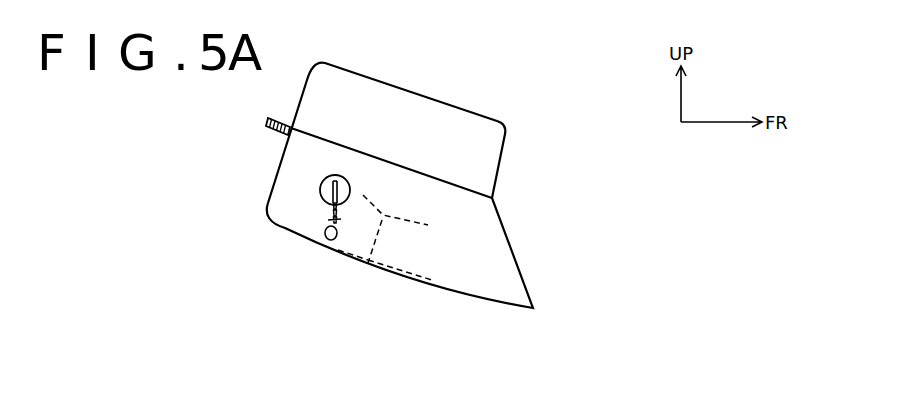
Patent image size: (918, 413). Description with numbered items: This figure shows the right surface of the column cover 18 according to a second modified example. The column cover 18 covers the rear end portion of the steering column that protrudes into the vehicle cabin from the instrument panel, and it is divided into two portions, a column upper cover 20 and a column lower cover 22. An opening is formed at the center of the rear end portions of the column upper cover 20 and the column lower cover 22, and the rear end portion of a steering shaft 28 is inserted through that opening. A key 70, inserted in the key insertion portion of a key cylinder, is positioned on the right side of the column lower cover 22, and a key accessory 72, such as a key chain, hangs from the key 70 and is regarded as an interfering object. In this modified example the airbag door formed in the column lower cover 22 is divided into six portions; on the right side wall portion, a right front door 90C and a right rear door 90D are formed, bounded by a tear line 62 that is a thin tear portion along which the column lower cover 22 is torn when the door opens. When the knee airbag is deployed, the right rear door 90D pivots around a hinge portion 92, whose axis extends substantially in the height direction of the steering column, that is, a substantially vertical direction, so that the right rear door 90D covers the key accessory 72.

The column cover 18 is at (420, 211).
The column upper cover 20 is at (432, 93).
The column lower cover 22 is at (502, 307).
The steering shaft 28 is at (270, 124).
The tear line 62 is at (408, 218).
The key 70 is at (350, 184).
The key accessory 72 is at (322, 240).
The hinge portion 92 is at (328, 220).
The right front door 90C is at (402, 252).
The right rear door 90D is at (360, 242).